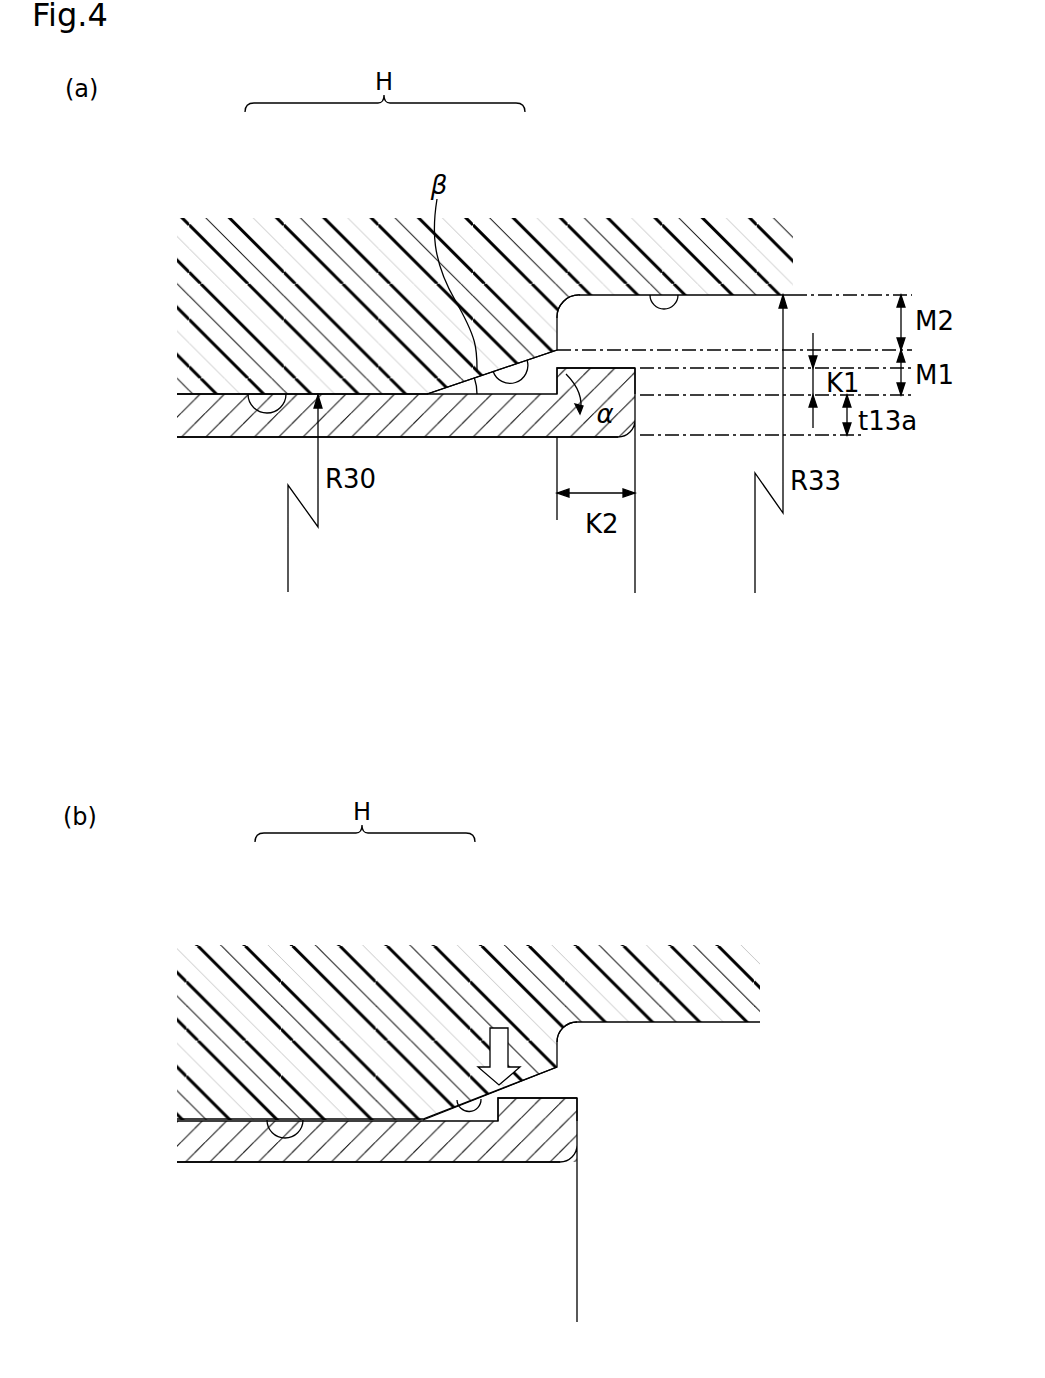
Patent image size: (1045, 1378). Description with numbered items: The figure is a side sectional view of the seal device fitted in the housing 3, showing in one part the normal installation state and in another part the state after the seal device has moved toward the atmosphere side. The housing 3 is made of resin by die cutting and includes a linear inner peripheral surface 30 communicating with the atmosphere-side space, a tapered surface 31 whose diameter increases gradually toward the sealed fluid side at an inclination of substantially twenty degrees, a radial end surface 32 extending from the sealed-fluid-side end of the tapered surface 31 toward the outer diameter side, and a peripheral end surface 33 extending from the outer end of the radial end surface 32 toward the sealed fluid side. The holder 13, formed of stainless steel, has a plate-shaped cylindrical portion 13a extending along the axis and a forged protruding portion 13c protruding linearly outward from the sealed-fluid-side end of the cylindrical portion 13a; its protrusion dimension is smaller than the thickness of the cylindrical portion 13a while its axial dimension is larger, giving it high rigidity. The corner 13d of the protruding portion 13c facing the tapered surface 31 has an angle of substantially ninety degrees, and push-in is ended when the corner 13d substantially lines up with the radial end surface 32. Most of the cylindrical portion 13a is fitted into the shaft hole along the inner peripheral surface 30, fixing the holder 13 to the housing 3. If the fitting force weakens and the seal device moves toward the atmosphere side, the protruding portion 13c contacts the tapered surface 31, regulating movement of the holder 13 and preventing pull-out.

The housing 3 is at (387, 245).
The holder 13 is at (640, 513).
The inner peripheral surface 30 is at (248, 394).
The tapered surface 31 is at (527, 360).
The radial end surface 32 is at (575, 317).
The peripheral end surface 33 is at (677, 295).
The cylindrical portion 13a is at (482, 437).
The protruding portion 13c is at (605, 384).
The corner 13d is at (557, 349).